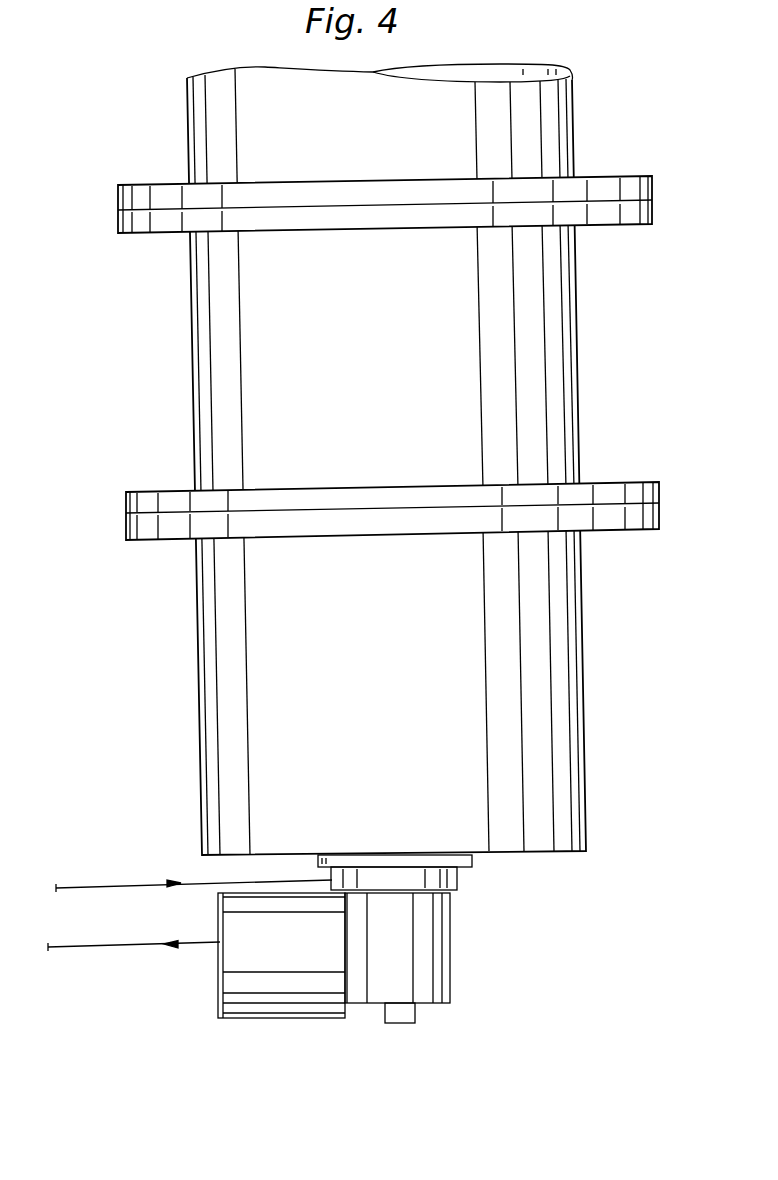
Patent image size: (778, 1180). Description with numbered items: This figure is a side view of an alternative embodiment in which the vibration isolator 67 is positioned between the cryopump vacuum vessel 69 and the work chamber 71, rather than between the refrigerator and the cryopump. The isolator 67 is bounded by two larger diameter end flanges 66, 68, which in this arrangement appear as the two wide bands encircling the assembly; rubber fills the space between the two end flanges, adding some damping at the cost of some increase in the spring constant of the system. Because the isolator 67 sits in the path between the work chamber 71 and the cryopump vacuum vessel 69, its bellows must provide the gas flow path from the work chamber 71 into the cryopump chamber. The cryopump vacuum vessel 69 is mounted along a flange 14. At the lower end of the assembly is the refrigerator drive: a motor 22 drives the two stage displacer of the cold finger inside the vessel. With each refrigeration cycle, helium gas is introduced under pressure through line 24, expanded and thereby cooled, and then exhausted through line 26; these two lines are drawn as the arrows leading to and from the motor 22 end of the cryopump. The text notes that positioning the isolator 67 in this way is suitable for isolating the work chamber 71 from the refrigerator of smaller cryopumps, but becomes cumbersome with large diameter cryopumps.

The flange 14 is at (636, 530).
The motor 22 is at (302, 1018).
The line 24 is at (132, 879).
The line 26 is at (133, 950).
The flange 66 is at (654, 210).
The isolator 67 is at (580, 321).
The flange 68 is at (659, 493).
The cryopump vacuum vessel 69 is at (586, 690).
The work chamber 71 is at (574, 127).